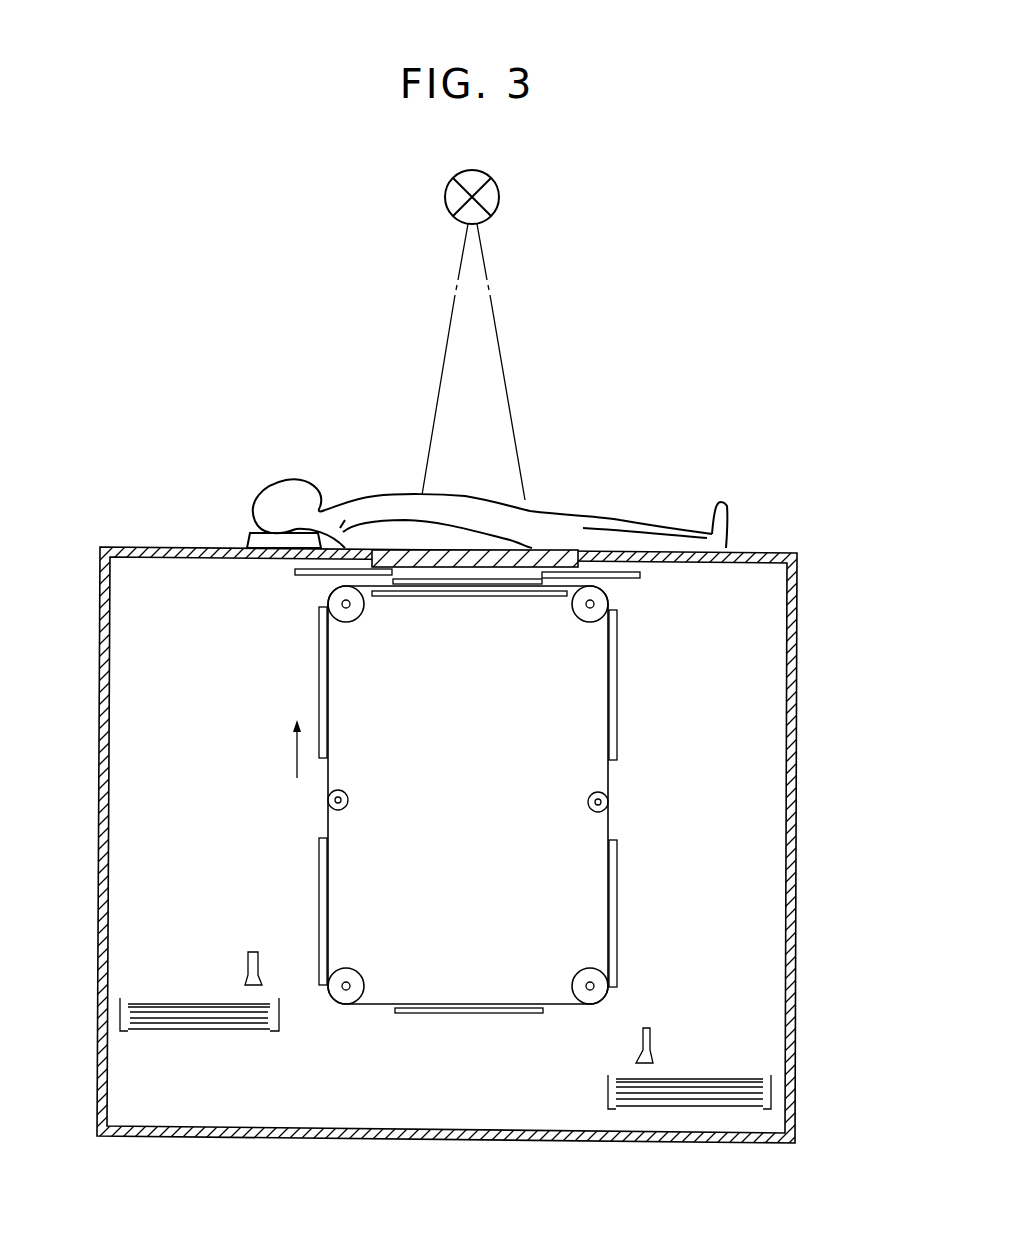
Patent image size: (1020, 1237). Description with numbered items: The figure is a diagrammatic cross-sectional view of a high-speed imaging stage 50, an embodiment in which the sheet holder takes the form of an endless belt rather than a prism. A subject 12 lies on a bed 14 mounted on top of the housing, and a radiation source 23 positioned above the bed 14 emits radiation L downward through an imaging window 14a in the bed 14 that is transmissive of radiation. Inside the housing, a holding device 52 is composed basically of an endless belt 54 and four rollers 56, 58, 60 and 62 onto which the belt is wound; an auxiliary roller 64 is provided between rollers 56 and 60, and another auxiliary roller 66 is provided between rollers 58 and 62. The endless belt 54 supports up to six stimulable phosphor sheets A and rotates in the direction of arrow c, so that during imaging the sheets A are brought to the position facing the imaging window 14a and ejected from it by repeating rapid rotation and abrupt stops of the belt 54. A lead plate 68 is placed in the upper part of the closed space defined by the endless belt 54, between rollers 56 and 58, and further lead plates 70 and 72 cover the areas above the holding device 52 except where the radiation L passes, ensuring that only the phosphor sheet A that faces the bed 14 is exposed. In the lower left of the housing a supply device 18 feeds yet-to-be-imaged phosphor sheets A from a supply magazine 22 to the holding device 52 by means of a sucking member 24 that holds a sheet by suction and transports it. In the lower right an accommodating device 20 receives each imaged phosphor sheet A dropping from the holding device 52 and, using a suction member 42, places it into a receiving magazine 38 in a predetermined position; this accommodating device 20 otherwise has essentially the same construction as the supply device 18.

The subject 12 is at (383, 493).
The bed 14 is at (351, 453).
The imaging window 14a is at (562, 560).
The supply device 18 is at (211, 899).
The accommodating device 20 is at (716, 1031).
The supply magazine 22 is at (250, 1030).
The radiation source 23 is at (498, 202).
The sucking member 24 is at (255, 953).
The receiving magazine 38 is at (675, 1108).
The suction member 42 is at (638, 1043).
The high-speed imaging stage 50 is at (195, 410).
The holding device 52 is at (694, 724).
The endless belt 54 is at (610, 828).
The roller 56 is at (355, 618).
The roller 58 is at (586, 620).
The roller 60 is at (355, 975).
The roller 62 is at (583, 976).
The auxiliary roller 64 is at (349, 800).
The auxiliary roller 66 is at (585, 808).
The lead plate 68 is at (488, 598).
The lead plate 70 is at (303, 578).
The lead plate 72 is at (632, 580).
The radiation L is at (495, 321).
The stimulable phosphor sheet A is at (320, 637).
The direction of rotation c is at (286, 749).